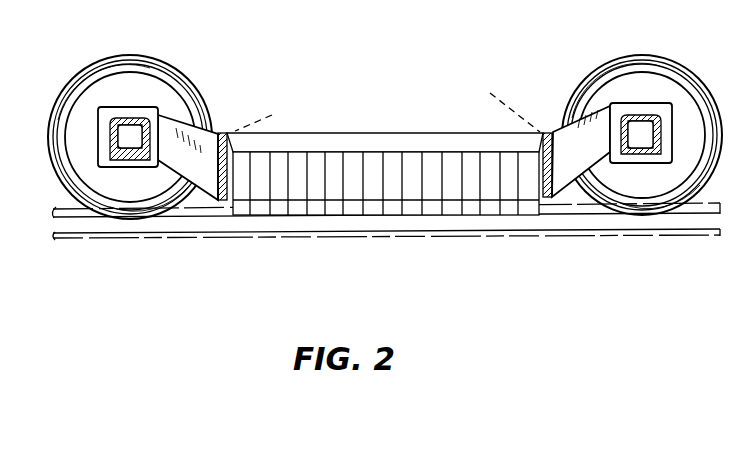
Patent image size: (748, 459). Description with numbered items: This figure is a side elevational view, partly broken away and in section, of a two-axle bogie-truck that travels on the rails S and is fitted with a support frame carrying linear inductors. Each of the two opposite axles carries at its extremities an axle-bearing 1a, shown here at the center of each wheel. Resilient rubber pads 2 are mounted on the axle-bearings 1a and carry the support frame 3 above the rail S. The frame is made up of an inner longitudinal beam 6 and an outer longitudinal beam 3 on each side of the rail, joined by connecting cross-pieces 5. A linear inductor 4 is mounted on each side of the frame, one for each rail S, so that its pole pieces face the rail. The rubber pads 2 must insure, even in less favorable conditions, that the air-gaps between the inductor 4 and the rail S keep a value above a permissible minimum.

The axle-bearing 1a is at (130, 132).
The rubber pads 2 is at (153, 132).
The support frame 3 is at (221, 133).
The linear inductor 4 is at (323, 157).
The cross-pieces 5 is at (387, 105).
The inner longitudinal beam 6 is at (380, 152).
The rails S is at (78, 225).